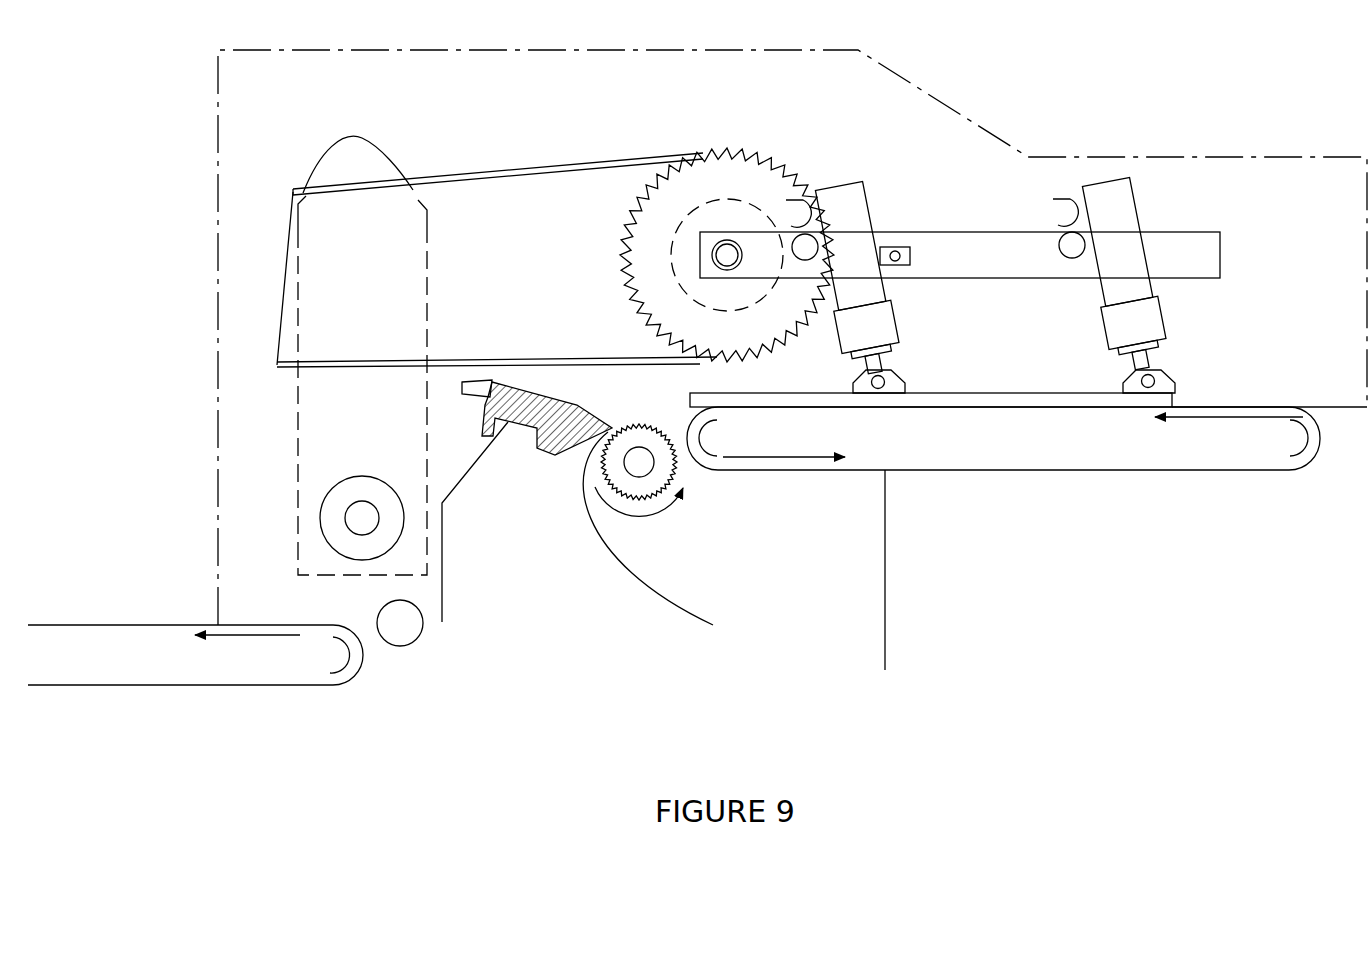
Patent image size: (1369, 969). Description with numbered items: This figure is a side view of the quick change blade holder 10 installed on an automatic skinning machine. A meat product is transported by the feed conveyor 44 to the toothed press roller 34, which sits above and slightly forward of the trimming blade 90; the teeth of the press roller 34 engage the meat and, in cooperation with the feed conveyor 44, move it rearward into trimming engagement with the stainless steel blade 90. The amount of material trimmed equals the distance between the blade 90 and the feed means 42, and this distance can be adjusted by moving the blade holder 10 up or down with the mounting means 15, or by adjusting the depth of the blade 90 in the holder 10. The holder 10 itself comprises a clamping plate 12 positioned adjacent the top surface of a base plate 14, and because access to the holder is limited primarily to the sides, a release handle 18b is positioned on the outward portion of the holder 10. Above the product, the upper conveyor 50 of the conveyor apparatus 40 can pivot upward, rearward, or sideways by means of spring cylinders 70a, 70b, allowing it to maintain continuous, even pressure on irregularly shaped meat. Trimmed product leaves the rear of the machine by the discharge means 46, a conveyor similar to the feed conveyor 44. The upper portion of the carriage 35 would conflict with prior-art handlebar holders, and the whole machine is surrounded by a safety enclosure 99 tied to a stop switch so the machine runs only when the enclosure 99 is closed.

The blade holder 10 is at (432, 365).
The clamping plate 12 is at (530, 397).
The base plate 14 is at (535, 448).
The mounting means 15 is at (440, 587).
The release handle 18b is at (463, 376).
The press roller 34 is at (771, 142).
The carriage 35 is at (613, 150).
The conveyor apparatus 40 is at (1028, 219).
The feed means 42 is at (648, 485).
The feed conveyor 44 is at (1158, 470).
The discharge means 46 is at (197, 685).
The upper conveyor 50 is at (964, 224).
The spring cylinder 70a is at (1110, 190).
The spring cylinder 70b is at (851, 200).
The trimming blade 90 is at (667, 537).
The safety enclosure 99 is at (215, 290).